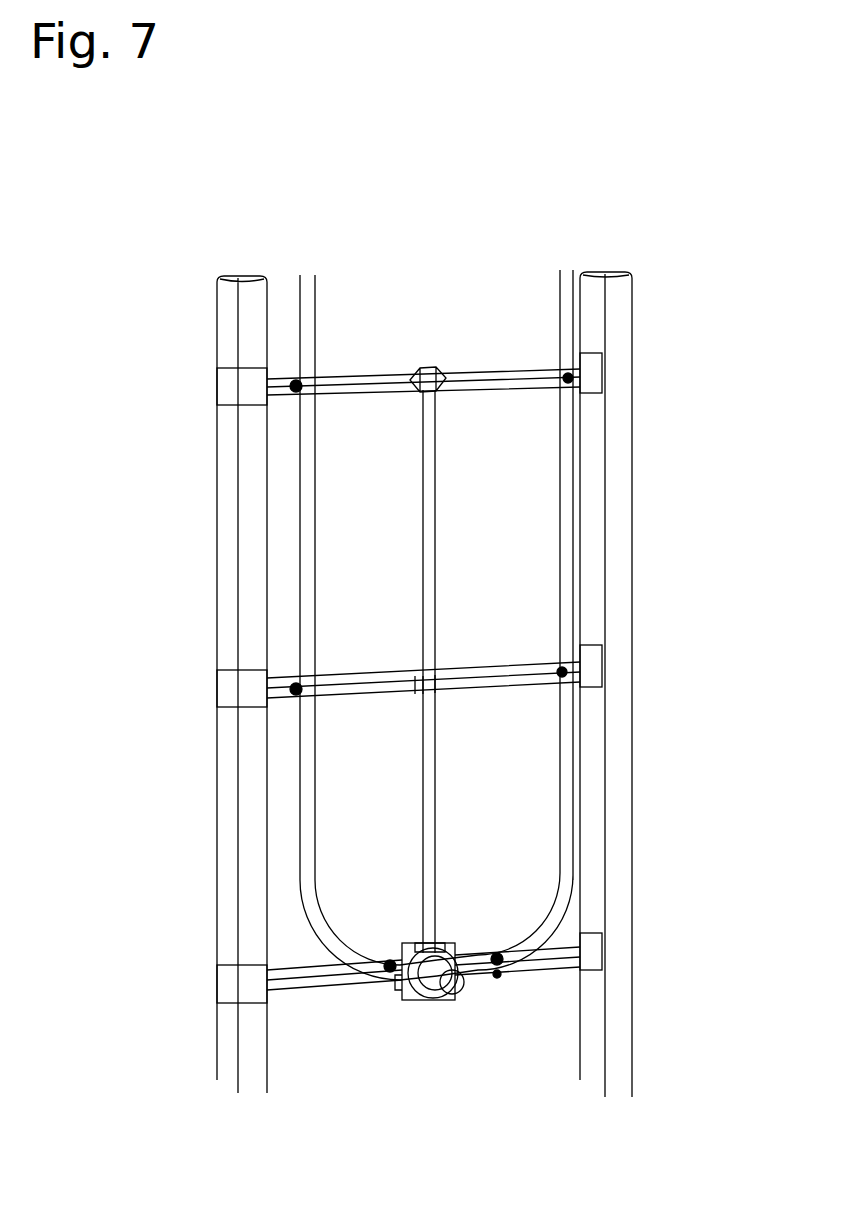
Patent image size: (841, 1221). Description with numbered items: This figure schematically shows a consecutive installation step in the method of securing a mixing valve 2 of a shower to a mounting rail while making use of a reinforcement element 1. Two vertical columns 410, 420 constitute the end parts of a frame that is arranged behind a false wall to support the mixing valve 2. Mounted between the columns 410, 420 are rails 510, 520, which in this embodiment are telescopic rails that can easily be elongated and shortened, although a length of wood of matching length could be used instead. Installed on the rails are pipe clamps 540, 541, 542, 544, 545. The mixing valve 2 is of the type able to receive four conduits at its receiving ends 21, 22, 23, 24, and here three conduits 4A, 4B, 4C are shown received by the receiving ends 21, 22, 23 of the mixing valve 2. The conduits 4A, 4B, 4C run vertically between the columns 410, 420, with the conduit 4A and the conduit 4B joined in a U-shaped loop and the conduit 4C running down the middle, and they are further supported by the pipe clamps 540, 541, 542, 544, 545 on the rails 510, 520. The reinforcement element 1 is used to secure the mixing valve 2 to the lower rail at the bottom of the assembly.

The reinforcement element 1 is at (431, 979).
The mixing valve 2 is at (442, 1000).
The receiving end 21 is at (440, 945).
The receiving end 22 is at (470, 983).
The receiving end 23 is at (400, 982).
The receiving end 24 is at (428, 1003).
The conduit 4A is at (307, 318).
The conduit 4B is at (568, 312).
The conduit 4C is at (437, 463).
The column 410 is at (615, 478).
The column 420 is at (228, 496).
The rail 510 is at (455, 375).
The rail 520 is at (447, 672).
The pipe clamp 540 is at (316, 387).
The pipe clamp 541 is at (560, 380).
The pipe clamp 542 is at (560, 672).
The pipe clamp 544 is at (390, 965).
The pipe clamp 545 is at (497, 958).